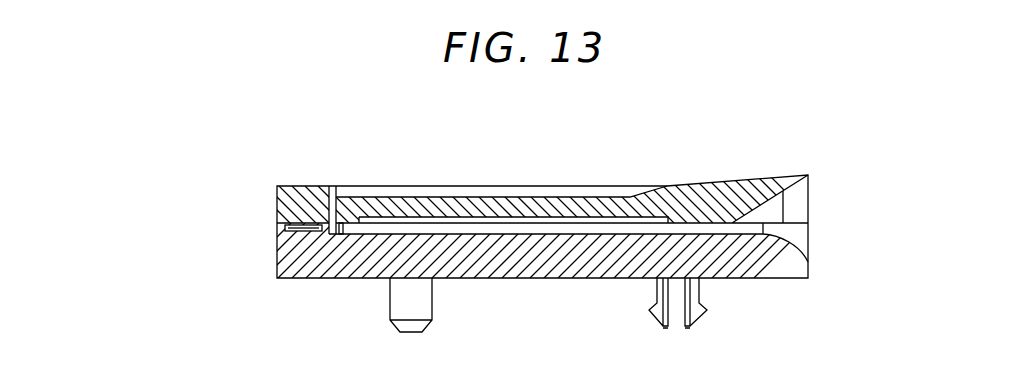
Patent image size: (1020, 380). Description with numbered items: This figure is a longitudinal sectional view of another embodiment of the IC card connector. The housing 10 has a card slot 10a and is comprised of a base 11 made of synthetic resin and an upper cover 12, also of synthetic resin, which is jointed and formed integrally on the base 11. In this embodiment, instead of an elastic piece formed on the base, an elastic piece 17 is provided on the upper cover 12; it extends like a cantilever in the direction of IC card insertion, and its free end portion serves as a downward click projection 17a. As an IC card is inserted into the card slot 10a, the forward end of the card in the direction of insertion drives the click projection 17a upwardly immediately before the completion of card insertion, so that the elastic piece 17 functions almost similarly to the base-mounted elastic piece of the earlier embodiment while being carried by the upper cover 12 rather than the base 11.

The housing 10 is at (192, 173).
The card slot 10a is at (777, 210).
The base 11 is at (283, 252).
The upper cover 12 is at (290, 203).
The elastic piece 17 is at (552, 204).
The click projection 17a is at (347, 231).